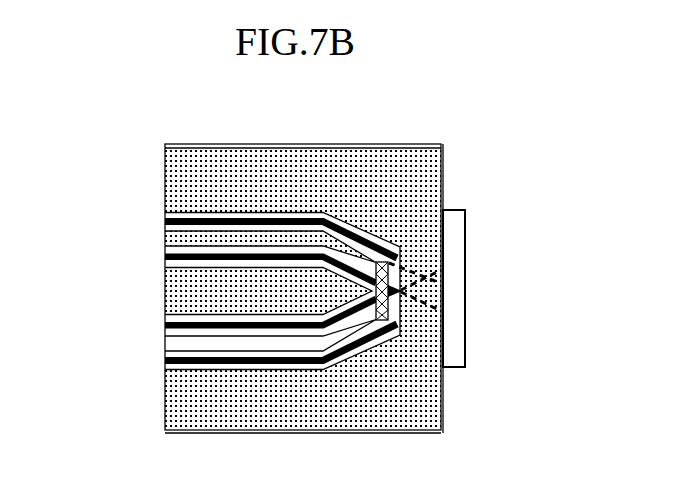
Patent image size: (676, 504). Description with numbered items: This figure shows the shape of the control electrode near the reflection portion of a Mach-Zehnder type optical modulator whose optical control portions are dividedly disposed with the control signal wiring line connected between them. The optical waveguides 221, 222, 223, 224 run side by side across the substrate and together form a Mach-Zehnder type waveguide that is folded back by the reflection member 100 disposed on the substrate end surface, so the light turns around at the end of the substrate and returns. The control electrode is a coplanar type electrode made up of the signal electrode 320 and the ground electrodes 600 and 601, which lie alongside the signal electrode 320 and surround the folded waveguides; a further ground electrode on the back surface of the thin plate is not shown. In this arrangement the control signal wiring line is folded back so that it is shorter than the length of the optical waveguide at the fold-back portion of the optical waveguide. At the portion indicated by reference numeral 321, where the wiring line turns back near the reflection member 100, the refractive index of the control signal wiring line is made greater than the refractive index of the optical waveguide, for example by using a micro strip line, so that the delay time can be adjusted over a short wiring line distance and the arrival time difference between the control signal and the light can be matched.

The reflection member 100 is at (453, 280).
The optical waveguide 221 is at (172, 222).
The optical waveguide 222 is at (168, 258).
The optical waveguide 223 is at (170, 329).
The optical waveguide 224 is at (172, 364).
The signal electrode 320 is at (247, 240).
The fold-back portion of the control signal wiring line 321 is at (390, 268).
The ground electrode 600 is at (393, 174).
The ground electrode 601 is at (275, 292).